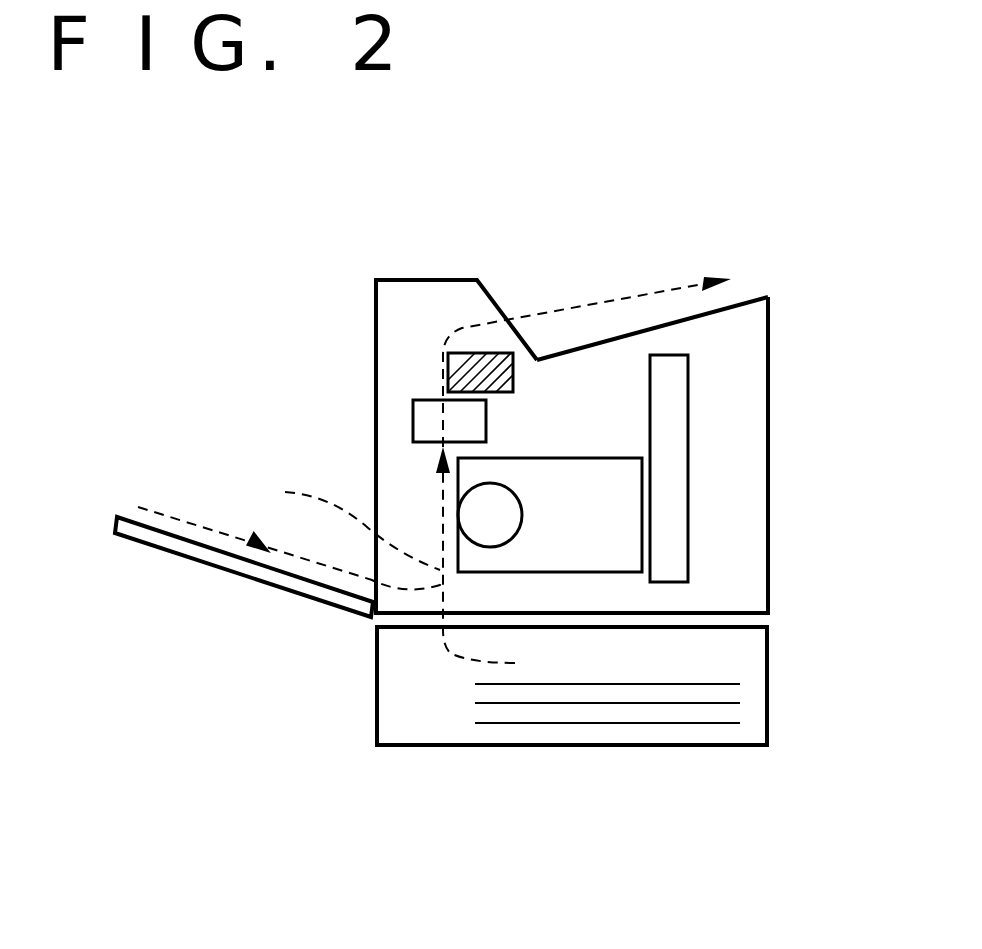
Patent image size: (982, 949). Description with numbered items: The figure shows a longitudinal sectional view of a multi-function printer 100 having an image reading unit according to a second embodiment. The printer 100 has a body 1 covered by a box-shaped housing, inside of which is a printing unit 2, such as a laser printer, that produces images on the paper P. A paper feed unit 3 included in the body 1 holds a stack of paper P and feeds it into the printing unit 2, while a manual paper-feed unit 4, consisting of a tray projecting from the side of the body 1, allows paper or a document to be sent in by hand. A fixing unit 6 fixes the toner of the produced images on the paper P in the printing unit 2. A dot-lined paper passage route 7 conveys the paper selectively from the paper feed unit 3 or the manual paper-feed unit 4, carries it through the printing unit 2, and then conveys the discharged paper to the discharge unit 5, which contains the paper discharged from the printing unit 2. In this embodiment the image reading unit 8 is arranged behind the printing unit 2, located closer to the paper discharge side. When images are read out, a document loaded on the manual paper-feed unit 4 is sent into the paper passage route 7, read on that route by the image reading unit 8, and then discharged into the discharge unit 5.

The multi-function printer 100 is at (467, 176).
The body 1 is at (770, 387).
The printing unit 2 is at (473, 515).
The paper feed unit 3 is at (770, 650).
The manual paper-feed unit 4 is at (132, 510).
The discharge unit 5 is at (603, 327).
The fixing unit 6 is at (423, 415).
The paper passage route 7 is at (351, 513).
The image reading unit 8 is at (447, 365).
The paper P is at (637, 702).